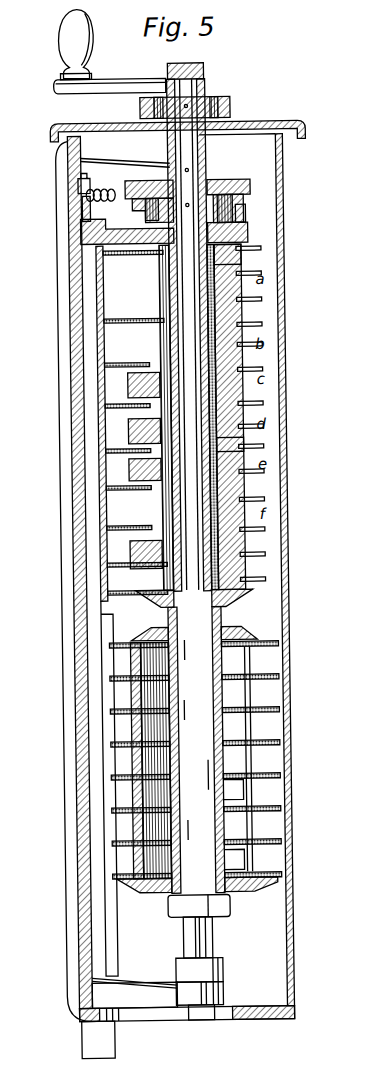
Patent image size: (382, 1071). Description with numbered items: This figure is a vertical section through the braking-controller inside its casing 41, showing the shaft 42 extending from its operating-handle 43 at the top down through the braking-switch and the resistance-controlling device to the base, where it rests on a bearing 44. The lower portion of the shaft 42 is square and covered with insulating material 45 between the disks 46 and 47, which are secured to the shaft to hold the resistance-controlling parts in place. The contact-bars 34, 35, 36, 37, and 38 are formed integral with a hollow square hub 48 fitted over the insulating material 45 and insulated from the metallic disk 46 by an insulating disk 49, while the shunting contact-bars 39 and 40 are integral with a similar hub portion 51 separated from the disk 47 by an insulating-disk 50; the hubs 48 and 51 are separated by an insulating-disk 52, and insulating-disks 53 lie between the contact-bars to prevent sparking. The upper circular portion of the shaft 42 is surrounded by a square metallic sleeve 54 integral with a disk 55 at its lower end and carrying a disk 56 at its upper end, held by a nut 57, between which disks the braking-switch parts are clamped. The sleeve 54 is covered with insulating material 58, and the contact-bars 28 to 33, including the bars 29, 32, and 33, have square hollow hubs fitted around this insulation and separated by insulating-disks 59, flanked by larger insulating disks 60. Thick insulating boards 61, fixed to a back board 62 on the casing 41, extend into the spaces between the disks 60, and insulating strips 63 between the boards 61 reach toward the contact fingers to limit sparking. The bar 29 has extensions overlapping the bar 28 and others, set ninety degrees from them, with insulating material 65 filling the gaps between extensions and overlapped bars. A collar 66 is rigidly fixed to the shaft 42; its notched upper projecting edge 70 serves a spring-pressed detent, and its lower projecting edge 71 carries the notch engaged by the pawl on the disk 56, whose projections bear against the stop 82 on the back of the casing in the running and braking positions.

The contact-bar 28 is at (168, 305).
The contact-bar 29 is at (246, 352).
The contact-bar 32 is at (265, 480).
The contact-bar 33 is at (232, 558).
The contact-bar 34 is at (259, 660).
The contact-bar 35 is at (259, 695).
The contact-bar 36 is at (241, 730).
The contact-bar 37 is at (140, 757).
The contact-bar 38 is at (140, 789).
The contact-bar 39 is at (141, 823).
The contact-bar 40 is at (141, 856).
The housing 41 is at (284, 620).
The shaft 42 is at (189, 356).
The operating-handle 43 is at (106, 91).
The bearing 44 is at (218, 988).
The insulating material 45 is at (176, 690).
The disk 46 is at (248, 638).
The disk 47 is at (238, 893).
The hub 48 is at (228, 795).
The disk of insulating material 49 is at (123, 640).
The insulating-disk 50 is at (128, 892).
The hub portion 51 is at (228, 863).
The insulating-disk 52 is at (277, 810).
The insulating-disks 53 is at (277, 677).
The sleeve 54 is at (176, 580).
The disk 55 is at (232, 604).
The disk 56 is at (252, 235).
The nut 57 is at (248, 205).
The insulating material 58 is at (170, 280).
The insulating-disks 59 is at (136, 468).
The insulating disks 60 is at (296, 375).
The sheets or boards of insulating material 61 is at (265, 404).
The back board 62 is at (107, 305).
The strips of insulating material 63 is at (118, 520).
The insulating material 65 is at (232, 262).
The collar 66 is at (212, 182).
The upper projecting edge 70 is at (255, 187).
The lower projecting edge 71 is at (250, 218).
The stop 82 is at (92, 232).